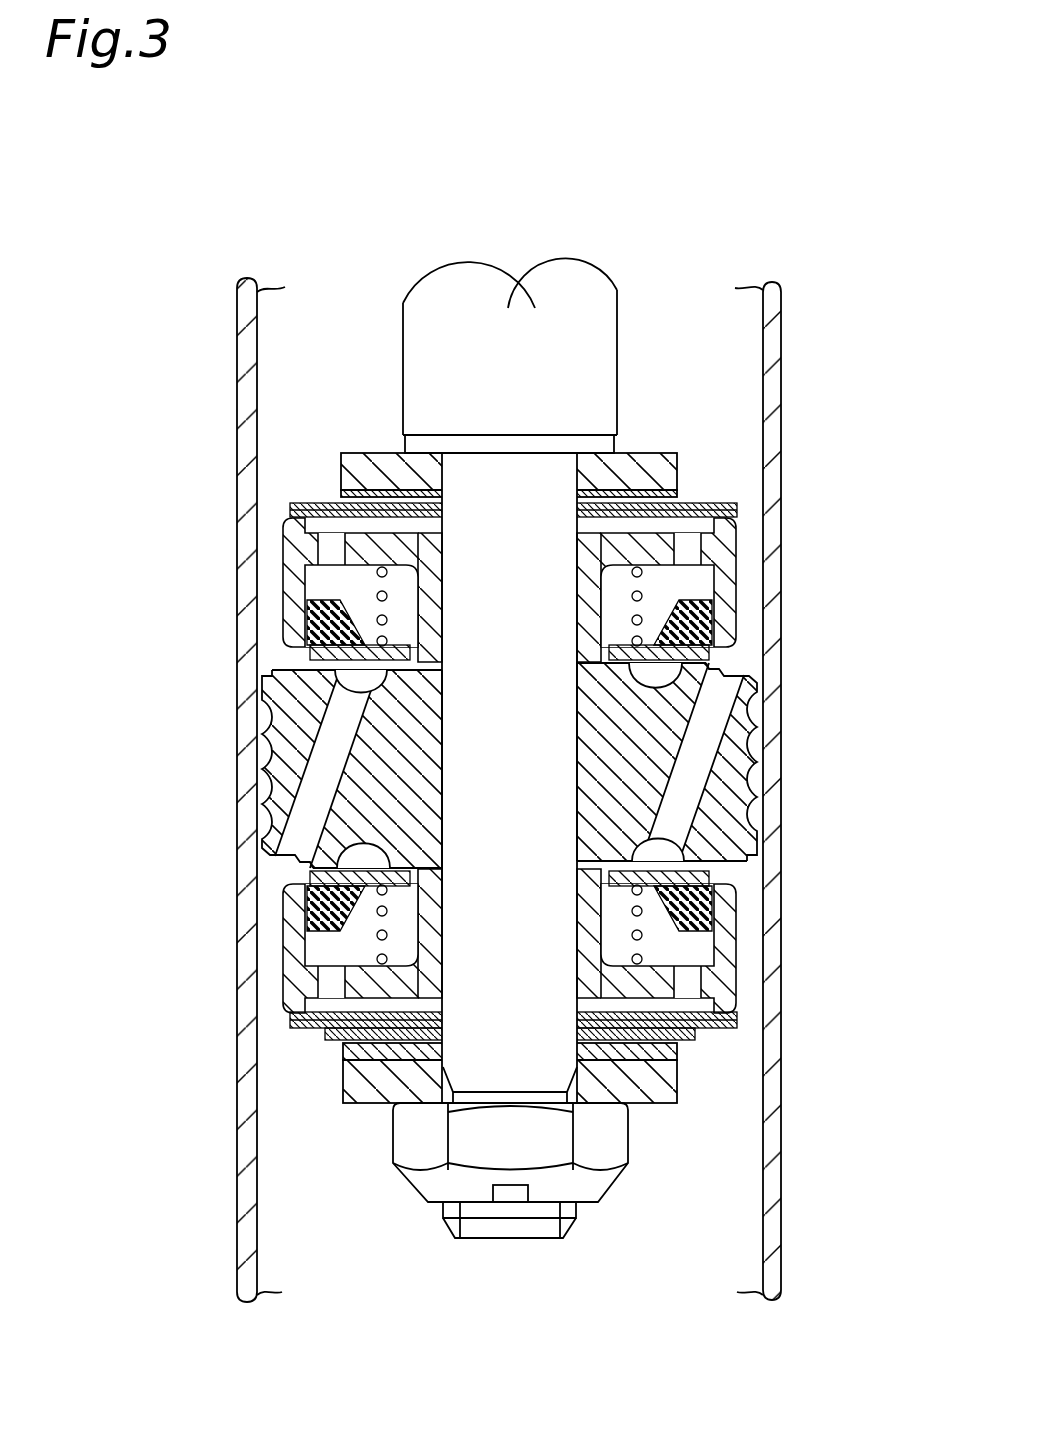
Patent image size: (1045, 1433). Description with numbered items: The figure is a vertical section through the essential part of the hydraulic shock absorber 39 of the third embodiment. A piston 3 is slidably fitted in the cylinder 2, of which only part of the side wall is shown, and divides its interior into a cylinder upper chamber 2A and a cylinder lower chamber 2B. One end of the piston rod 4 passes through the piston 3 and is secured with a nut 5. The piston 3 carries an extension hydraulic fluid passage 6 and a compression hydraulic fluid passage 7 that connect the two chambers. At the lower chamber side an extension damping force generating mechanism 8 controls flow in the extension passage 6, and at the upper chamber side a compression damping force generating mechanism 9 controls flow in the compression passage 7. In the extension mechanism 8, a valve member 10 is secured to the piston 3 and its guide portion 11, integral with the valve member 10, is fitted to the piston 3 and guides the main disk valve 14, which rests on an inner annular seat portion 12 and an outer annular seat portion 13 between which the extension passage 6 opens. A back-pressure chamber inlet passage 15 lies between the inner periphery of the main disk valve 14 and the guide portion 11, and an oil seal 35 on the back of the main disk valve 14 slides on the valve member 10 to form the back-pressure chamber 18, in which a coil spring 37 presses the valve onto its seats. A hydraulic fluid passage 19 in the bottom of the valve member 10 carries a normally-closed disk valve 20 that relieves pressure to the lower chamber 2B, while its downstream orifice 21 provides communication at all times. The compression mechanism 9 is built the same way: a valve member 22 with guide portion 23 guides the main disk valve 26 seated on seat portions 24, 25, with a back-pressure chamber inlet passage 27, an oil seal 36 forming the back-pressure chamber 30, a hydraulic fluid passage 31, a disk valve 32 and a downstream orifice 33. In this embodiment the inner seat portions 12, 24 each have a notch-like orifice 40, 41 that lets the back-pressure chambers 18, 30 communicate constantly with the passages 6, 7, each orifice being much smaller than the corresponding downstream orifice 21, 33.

The cylinder 2 is at (770, 306).
The cylinder upper chamber 2A is at (722, 376).
The cylinder lower chamber 2B is at (725, 1241).
The piston 3 is at (737, 753).
The piston rod 4 is at (458, 284).
The nut 5 is at (428, 1196).
The extension hydraulic fluid passage 6 is at (718, 703).
The compression hydraulic fluid passage 7 is at (307, 815).
The extension damping force generating mechanism 8 is at (743, 985).
The compression damping force generating mechanism 9 is at (277, 549).
The valve member 10 is at (300, 931).
The guide portion 11 is at (432, 916).
The annular seat portion 12 is at (746, 812).
The annular seat portion 13 is at (705, 867).
The main disk valve 14 is at (725, 911).
The back-pressure chamber inlet passage 15 is at (678, 1035).
The back-pressure chamber 18 is at (728, 961).
The hydraulic fluid passage 19 is at (333, 991).
The disk valve 20 is at (312, 1028).
The downstream orifice 21 is at (317, 1023).
The valve member 22 is at (723, 566).
The guide portion 23 is at (585, 602).
The seat portion 24 is at (365, 692).
The seat portion 25 is at (270, 670).
The main disk valve 26 is at (320, 651).
The back-pressure chamber inlet passage 27 is at (272, 760).
The back-pressure chamber 30 is at (340, 594).
The hydraulic fluid passage 31 is at (683, 543).
The disk valve 32 is at (727, 508).
The downstream orifice 33 is at (732, 524).
The oil seal 35 is at (695, 938).
The oil seal 36 is at (330, 638).
The coil spring 37 is at (713, 1023).
The hydraulic shock absorber 39 is at (727, 220).
The orifice 40 is at (620, 873).
The orifice 41 is at (335, 673).